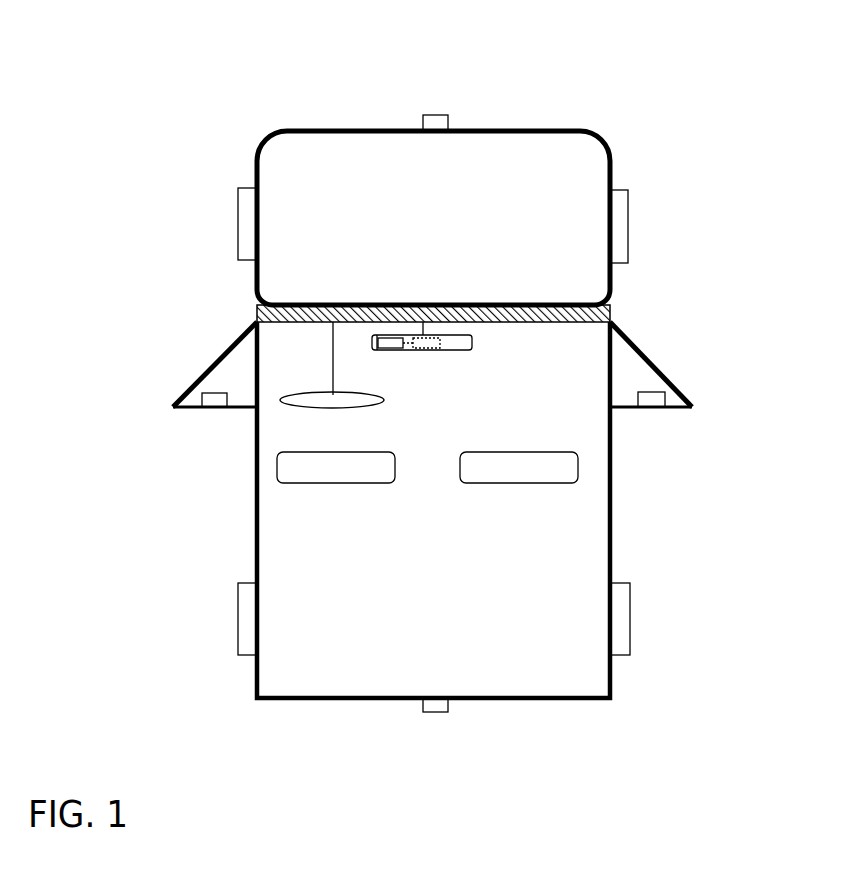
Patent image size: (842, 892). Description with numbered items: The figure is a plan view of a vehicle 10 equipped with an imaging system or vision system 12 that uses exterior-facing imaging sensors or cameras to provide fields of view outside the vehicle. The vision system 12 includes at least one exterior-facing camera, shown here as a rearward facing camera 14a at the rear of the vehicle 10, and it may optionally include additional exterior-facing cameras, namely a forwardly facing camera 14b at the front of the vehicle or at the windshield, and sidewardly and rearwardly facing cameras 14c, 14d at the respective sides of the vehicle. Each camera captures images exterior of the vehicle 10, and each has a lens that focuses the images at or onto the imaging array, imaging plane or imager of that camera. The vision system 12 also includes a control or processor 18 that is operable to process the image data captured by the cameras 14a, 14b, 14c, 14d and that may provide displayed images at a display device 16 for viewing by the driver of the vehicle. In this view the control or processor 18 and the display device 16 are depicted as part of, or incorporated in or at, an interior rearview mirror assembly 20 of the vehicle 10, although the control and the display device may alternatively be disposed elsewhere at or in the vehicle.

The vehicle 10 is at (182, 145).
The vision system 12 is at (388, 727).
The rearward facing camera 14a is at (438, 710).
The forwardly facing camera 14b is at (433, 116).
The sidewardly/rearwardly facing camera 14c is at (213, 400).
The sidewardly/rearwardly facing camera 14d is at (653, 402).
The display device 16 is at (393, 343).
The control or processor 18 is at (428, 342).
The interior rearview mirror assembly 20 is at (472, 340).